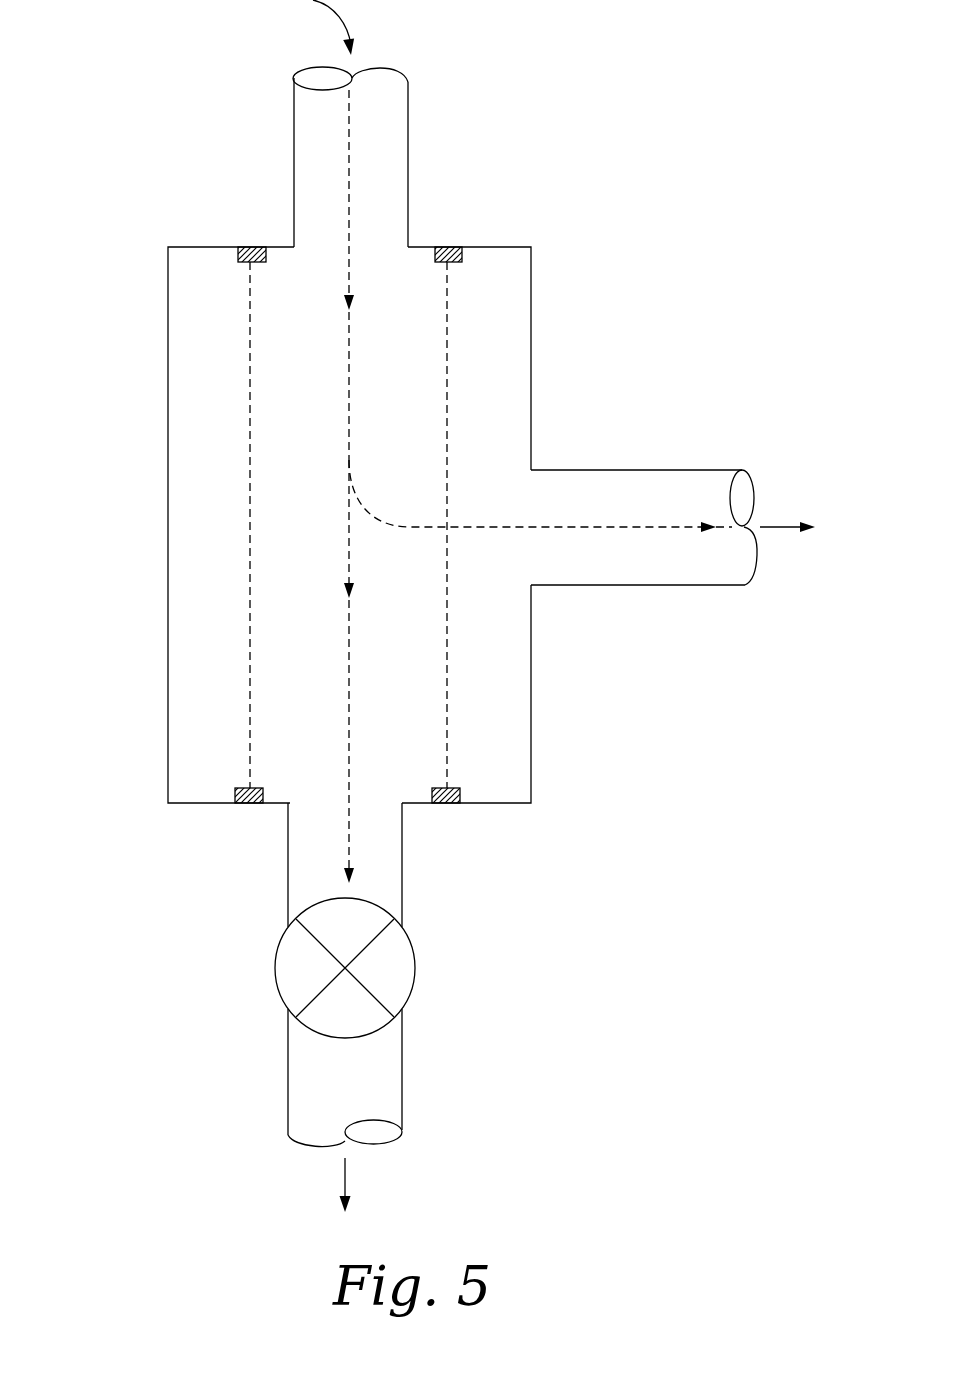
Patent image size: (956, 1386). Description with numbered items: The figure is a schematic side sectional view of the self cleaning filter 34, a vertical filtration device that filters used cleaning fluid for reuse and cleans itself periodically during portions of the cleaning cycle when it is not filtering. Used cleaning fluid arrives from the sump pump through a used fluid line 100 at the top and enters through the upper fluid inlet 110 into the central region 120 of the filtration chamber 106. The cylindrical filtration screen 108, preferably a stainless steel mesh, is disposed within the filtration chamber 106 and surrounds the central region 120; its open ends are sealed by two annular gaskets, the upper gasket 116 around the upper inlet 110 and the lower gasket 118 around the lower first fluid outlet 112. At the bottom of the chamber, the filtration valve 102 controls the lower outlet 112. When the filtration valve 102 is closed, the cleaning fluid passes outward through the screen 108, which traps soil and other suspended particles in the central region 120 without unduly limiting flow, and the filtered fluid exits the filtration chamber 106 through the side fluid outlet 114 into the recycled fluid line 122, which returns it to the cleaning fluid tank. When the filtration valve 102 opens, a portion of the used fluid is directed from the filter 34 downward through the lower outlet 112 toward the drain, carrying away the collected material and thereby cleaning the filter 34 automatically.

The self cleaning filter 34 is at (100, 400).
The used fluid line 100 is at (425, 96).
The filtration valve 102 is at (266, 1007).
The filtration chamber 106 is at (550, 738).
The filtration screen 108 is at (240, 475).
The fluid inlet 110 is at (382, 226).
The first fluid outlet 112 is at (314, 814).
The side fluid outlet 114 is at (550, 549).
The upper gasket 116 is at (475, 283).
The lower gasket 118 is at (472, 775).
The central region 120 is at (408, 644).
The recycled fluid line 122 is at (687, 458).